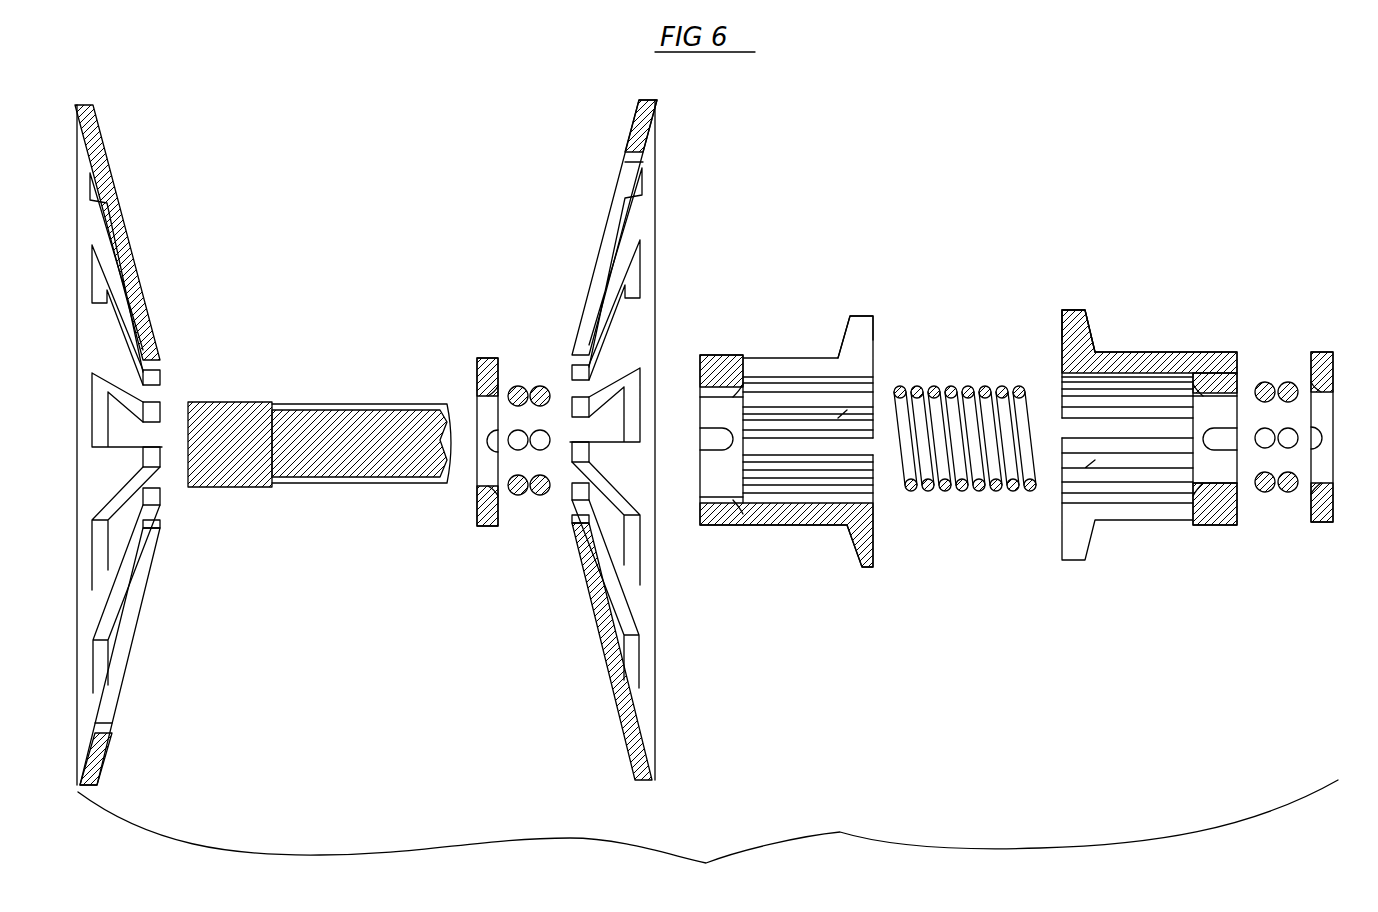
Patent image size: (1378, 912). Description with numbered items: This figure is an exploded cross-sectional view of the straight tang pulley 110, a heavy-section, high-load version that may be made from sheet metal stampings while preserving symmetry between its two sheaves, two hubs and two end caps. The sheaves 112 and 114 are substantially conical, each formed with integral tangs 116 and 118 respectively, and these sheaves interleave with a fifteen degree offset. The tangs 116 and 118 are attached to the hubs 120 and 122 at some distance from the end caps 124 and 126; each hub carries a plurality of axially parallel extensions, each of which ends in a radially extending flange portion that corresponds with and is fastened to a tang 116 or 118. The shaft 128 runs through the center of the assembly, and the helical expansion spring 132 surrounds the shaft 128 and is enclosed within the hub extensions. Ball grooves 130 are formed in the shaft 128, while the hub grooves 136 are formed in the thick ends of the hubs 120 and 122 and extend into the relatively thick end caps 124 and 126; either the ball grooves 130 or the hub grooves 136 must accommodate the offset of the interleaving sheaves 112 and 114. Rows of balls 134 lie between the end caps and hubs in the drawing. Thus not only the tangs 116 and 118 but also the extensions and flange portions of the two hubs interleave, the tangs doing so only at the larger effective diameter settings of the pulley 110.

The pulley 110 is at (708, 837).
The sheave 112 is at (652, 160).
The sheave 114 is at (113, 154).
The tang 116 is at (605, 245).
The tang 118 is at (147, 303).
The hub 120 is at (818, 435).
The hub 122 is at (1162, 428).
The end cap 124 is at (483, 358).
The end cap 126 is at (1322, 352).
The shaft 128 is at (215, 402).
The ball grooves 130 is at (350, 403).
The helical expansion spring 132 is at (932, 390).
The ball bearings 134 is at (545, 496).
The hub grooves 136 is at (511, 490).